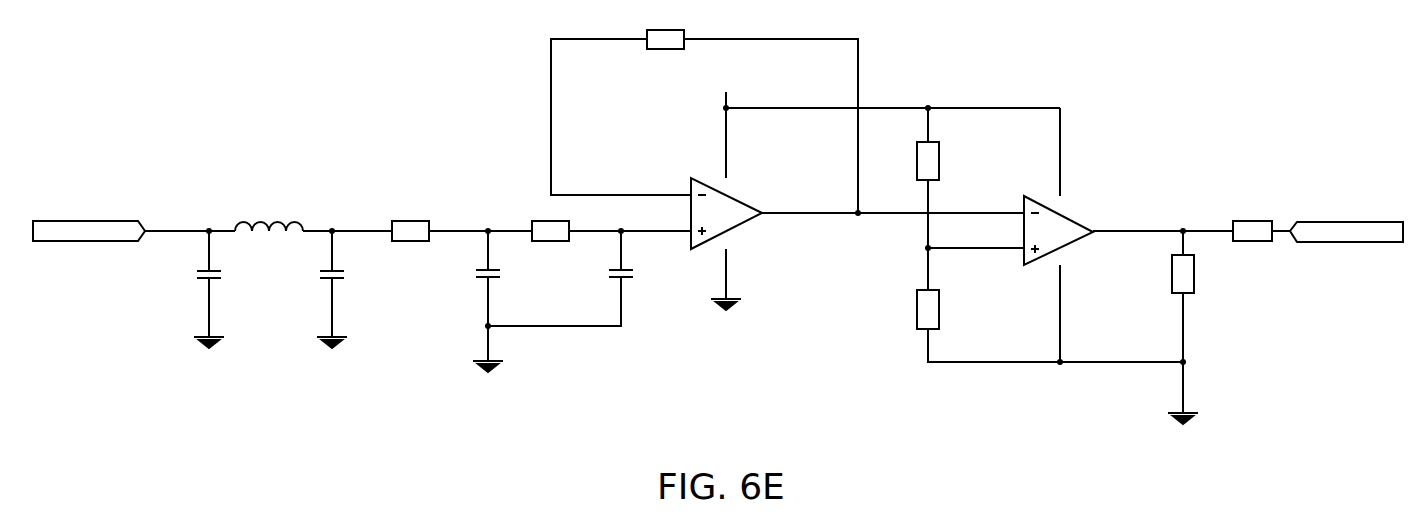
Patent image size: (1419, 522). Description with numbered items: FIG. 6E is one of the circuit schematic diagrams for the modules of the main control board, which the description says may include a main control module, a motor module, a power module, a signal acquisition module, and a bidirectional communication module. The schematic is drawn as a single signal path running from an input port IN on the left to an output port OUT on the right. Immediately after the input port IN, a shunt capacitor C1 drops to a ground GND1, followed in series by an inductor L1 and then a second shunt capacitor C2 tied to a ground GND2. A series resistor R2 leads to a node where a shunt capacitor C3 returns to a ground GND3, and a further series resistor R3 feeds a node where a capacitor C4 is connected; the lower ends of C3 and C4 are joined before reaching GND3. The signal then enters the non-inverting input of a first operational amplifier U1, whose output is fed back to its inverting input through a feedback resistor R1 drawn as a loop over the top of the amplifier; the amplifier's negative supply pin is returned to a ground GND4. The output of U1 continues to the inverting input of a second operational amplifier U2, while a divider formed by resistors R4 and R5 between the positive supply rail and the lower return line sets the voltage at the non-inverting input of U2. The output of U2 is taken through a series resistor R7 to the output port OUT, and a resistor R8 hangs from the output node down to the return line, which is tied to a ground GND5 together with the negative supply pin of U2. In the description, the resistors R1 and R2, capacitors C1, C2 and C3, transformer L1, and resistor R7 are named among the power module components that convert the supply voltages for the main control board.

The input port IN is at (89, 231).
The capacitor C1 is at (216, 284).
The transformer L1 is at (269, 219).
The capacitor C2 is at (339, 284).
The resistor R2 is at (410, 225).
The capacitor C3 is at (495, 296).
The resistor R3 is at (550, 225).
The capacitor C4 is at (568, 278).
The resistor R1 is at (704, 115).
The operational amplifier U1 is at (726, 195).
The resistor R4 is at (936, 178).
The resistor R5 is at (1050, 305).
The operational amplifier U2 is at (1015, 235).
The resistor R7 is at (1252, 222).
The resistor R8 is at (1191, 322).
The output port OUT is at (1346, 232).
The ground GND1 is at (209, 352).
The ground GND2 is at (332, 352).
The ground GND3 is at (488, 376).
The ground GND4 is at (726, 315).
The ground GND5 is at (1183, 429).